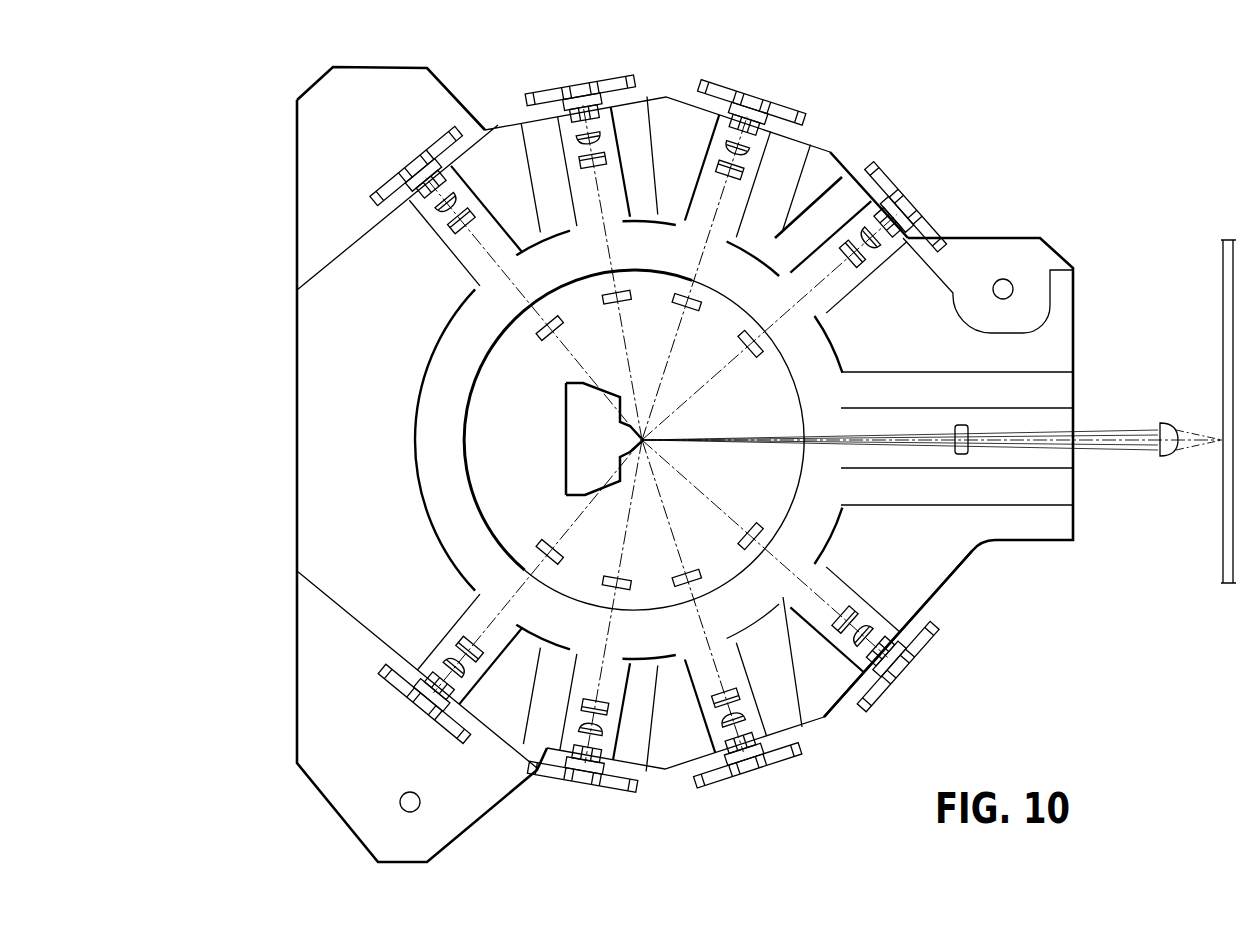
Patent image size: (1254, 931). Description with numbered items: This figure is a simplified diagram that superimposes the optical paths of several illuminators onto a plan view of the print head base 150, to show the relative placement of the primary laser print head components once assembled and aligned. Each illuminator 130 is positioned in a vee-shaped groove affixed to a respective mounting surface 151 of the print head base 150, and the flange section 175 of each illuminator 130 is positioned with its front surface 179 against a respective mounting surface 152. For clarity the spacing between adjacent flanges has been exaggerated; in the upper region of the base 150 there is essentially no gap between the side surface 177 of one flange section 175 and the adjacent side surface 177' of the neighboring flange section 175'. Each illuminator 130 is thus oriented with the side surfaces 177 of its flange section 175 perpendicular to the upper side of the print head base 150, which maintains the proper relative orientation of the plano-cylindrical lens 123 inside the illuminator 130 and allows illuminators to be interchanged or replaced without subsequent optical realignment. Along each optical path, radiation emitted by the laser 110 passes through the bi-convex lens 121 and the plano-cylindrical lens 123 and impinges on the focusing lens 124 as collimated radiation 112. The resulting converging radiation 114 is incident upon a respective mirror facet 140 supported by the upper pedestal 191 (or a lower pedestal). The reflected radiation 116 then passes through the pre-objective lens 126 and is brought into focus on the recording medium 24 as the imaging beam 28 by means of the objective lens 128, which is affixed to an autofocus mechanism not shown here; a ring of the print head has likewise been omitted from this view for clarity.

The print head base 150 is at (316, 84).
The flange section 175 is at (690, 383).
The side surface 177 is at (610, 245).
The adjacent side surface 177' is at (698, 248).
The adjacent flange section 175' is at (776, 274).
The laser 110 is at (905, 667).
The front surface 179 is at (857, 706).
The mounting surface 152 is at (918, 614).
The illuminator 130 is at (812, 762).
The mounting surface 151 is at (797, 713).
The bi-convex lens 121 is at (415, 672).
The plano-cylindrical lens 123 is at (458, 648).
The converging radiation 114 is at (565, 526).
The focusing lens 124 is at (560, 558).
The collimated radiation 112 is at (533, 611).
The upper pedestal 191 is at (565, 420).
The mirror facet 140 is at (650, 437).
The reflected radiation 116 is at (766, 448).
The pre-objective lens 126 is at (962, 424).
The objective lens 128 is at (1170, 456).
The imaging beam 28 is at (1198, 425).
The recording medium 24 is at (1220, 576).